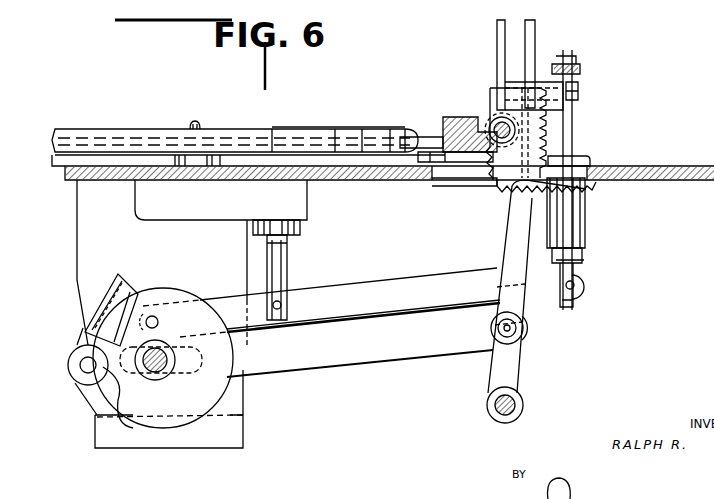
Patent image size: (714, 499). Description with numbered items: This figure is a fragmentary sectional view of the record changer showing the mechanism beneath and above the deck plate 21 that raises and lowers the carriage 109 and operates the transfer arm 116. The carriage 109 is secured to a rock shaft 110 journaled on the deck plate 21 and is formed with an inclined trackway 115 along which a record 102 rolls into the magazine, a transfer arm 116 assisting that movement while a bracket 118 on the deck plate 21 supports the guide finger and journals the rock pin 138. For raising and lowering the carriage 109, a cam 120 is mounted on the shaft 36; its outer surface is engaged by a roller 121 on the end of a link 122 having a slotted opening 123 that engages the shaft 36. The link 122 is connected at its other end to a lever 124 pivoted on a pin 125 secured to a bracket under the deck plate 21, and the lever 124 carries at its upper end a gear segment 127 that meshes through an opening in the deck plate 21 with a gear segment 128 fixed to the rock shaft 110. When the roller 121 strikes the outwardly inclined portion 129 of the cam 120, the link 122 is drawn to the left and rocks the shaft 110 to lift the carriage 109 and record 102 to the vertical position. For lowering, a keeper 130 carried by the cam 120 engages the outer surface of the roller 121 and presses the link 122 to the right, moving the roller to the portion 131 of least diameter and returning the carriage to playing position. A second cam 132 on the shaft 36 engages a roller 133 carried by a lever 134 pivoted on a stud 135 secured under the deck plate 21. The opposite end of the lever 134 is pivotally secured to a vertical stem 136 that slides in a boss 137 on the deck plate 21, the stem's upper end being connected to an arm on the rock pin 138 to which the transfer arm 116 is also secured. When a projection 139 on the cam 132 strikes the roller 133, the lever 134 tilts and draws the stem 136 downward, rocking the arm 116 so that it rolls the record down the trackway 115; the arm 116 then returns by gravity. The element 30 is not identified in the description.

The deck plate 21 is at (668, 168).
The feed bar 30 is at (303, 146).
The shaft 36 is at (157, 404).
The record 102 is at (349, 130).
The carriage 109 is at (423, 134).
The rock shaft 110 is at (493, 118).
The inclined trackway 115 is at (455, 115).
The transfer arm 116 is at (497, 32).
The bracket 118 is at (534, 38).
The cam 120 is at (172, 432).
The roller 121 is at (81, 383).
The link 122 is at (347, 358).
The slotted opening 123 is at (238, 358).
The lever 124 is at (514, 359).
The pin 125 is at (519, 402).
The gear segment 127 is at (517, 184).
The gear segment 128 is at (496, 158).
The outwardly inclined portion 129 is at (113, 418).
The keeper 130 is at (111, 270).
The portion of least diameter 131 is at (85, 348).
The cam 132 is at (147, 392).
The roller 133 is at (158, 318).
The lever 134 is at (350, 296).
The stud 135 is at (283, 272).
The vertical stem 136 is at (574, 146).
The boss 137 is at (573, 80).
The rock pin 138 is at (578, 98).
The projection 139 is at (112, 380).